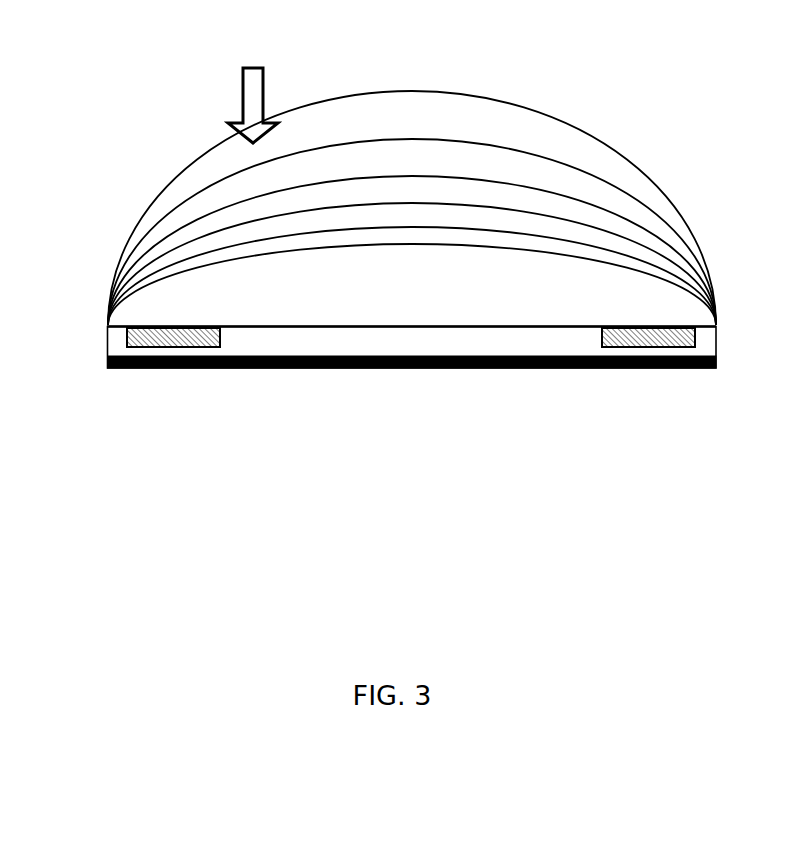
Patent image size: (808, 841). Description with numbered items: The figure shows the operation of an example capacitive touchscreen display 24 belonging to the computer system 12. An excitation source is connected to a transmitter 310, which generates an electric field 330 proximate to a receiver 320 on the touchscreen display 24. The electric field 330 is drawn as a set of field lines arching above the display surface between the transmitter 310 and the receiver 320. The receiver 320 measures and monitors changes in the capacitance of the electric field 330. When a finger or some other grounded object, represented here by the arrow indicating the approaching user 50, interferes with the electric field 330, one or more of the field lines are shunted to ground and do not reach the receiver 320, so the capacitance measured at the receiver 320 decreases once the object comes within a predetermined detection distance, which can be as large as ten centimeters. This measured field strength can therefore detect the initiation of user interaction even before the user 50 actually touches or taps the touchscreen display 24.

The computer system 12 is at (716, 342).
The touchscreen display 24 is at (455, 325).
The user 50 is at (262, 72).
The transmitter 310 is at (477, 369).
The receiver 320 is at (180, 345).
The electric field 330 is at (663, 202).